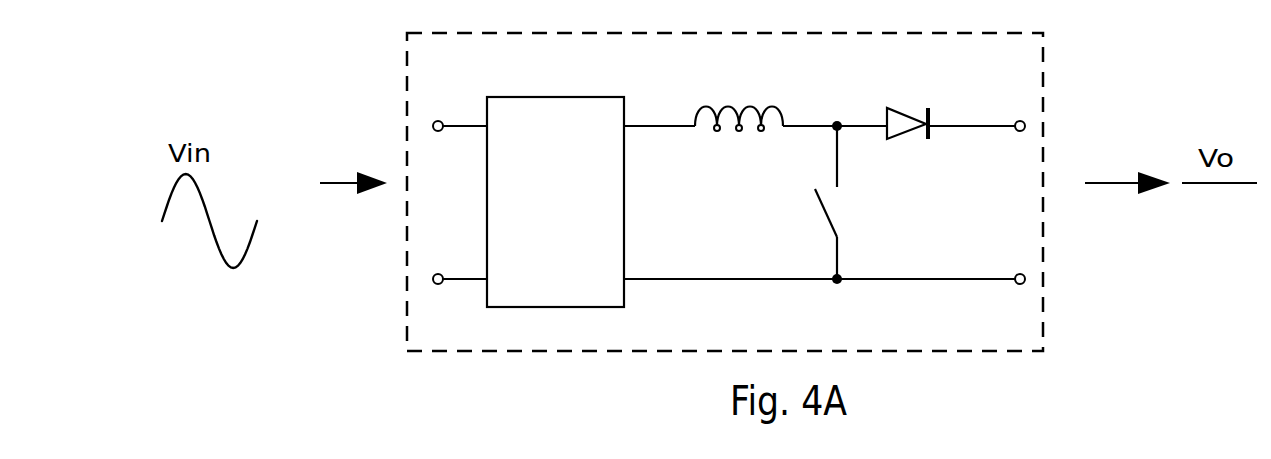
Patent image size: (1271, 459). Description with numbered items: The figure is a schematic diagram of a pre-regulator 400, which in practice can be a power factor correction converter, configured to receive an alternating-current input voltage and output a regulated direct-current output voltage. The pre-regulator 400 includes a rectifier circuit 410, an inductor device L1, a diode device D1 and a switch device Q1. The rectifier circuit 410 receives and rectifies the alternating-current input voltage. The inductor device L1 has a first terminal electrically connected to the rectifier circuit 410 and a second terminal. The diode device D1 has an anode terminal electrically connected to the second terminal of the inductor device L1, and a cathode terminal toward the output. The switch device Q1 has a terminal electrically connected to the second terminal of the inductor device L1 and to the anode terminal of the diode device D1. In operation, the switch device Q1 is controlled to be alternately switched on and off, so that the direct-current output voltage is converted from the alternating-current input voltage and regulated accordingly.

The pre-regulator 400 is at (716, 331).
The rectifier circuit 410 is at (578, 248).
The inductor device L1 is at (739, 104).
The diode device D1 is at (907, 108).
The switch device Q1 is at (848, 202).